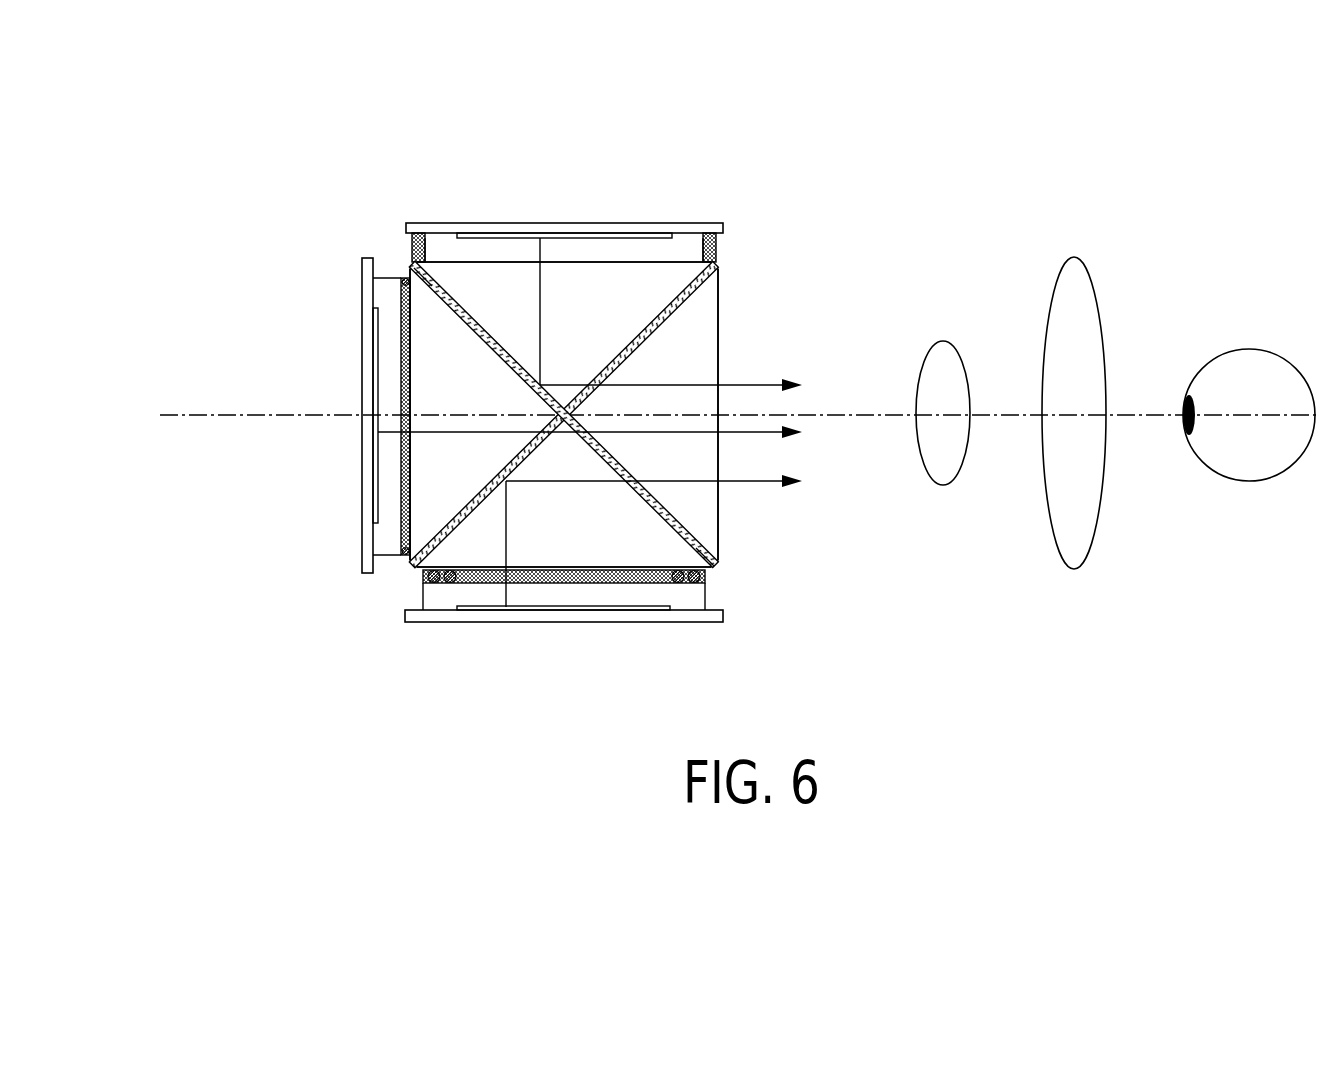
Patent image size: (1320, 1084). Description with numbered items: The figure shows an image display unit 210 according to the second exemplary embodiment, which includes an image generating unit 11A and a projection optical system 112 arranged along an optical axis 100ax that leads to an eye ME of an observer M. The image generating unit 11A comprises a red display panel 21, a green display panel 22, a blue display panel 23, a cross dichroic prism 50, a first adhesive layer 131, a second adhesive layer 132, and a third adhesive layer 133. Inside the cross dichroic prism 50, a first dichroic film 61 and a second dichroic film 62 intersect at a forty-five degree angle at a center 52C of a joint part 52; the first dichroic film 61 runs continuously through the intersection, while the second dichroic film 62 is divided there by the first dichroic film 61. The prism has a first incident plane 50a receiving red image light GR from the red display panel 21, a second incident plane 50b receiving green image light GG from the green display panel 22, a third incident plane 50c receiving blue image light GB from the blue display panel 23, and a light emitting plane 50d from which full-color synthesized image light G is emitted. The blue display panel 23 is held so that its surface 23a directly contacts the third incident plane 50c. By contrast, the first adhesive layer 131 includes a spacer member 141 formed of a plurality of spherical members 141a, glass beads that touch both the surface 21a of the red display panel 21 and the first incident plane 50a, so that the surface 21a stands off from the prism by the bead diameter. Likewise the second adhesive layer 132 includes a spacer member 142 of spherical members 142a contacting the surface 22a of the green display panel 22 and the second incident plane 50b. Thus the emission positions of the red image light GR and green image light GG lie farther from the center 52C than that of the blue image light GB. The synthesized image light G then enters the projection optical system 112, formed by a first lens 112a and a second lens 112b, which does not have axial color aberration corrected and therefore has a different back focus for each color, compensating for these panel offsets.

The image generating unit 11A is at (564, 195).
The red display panel 21 is at (526, 629).
The surface of the red display panel 21a is at (625, 570).
The green display panel 22 is at (335, 401).
The surface of the green display panel 22a is at (420, 472).
The blue display panel 23 is at (628, 215).
The surface of the blue display panel 23a is at (524, 262).
The cross dichroic prism 50 is at (537, 424).
The first incident plane 50a is at (530, 570).
The second incident plane 50b is at (407, 350).
The third incident plane 50c is at (578, 262).
The light emitting plane 50d is at (720, 304).
The joint part 52 is at (485, 414).
The center of the joint part 52C is at (560, 412).
The first dichroic film 61 is at (712, 278).
The second dichroic film 62 is at (418, 285).
The optical axis 100ax is at (181, 413).
The first adhesive layer 131 is at (582, 583).
The second adhesive layer 132 is at (403, 452).
The third adhesive layer 133 is at (413, 247).
The spacer member 141 is at (520, 625).
The first spherical members 141a is at (423, 575).
The spacer member 142 is at (308, 377).
The second spherical members 142a is at (401, 273).
The image display unit 210 is at (1047, 407).
The projection optical system 112 is at (1010, 461).
The first lens 112a is at (948, 474).
The second lens 112b is at (1062, 534).
The eye ME is at (1215, 450).
The observer M is at (1249, 454).
The synthesized image light G is at (634, 513).
The red image light GR is at (777, 390).
The green image light GG is at (768, 438).
The blue image light GB is at (755, 484).